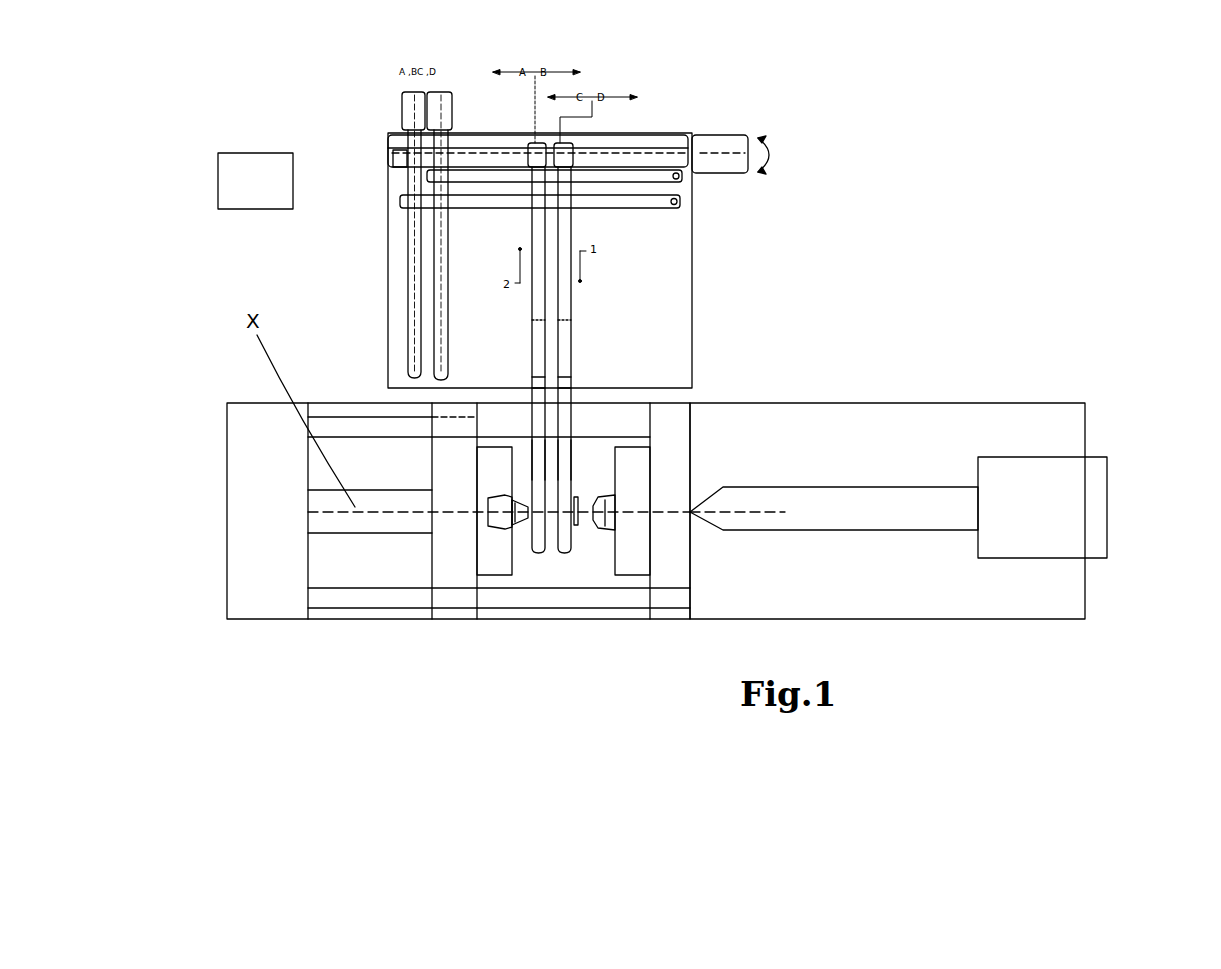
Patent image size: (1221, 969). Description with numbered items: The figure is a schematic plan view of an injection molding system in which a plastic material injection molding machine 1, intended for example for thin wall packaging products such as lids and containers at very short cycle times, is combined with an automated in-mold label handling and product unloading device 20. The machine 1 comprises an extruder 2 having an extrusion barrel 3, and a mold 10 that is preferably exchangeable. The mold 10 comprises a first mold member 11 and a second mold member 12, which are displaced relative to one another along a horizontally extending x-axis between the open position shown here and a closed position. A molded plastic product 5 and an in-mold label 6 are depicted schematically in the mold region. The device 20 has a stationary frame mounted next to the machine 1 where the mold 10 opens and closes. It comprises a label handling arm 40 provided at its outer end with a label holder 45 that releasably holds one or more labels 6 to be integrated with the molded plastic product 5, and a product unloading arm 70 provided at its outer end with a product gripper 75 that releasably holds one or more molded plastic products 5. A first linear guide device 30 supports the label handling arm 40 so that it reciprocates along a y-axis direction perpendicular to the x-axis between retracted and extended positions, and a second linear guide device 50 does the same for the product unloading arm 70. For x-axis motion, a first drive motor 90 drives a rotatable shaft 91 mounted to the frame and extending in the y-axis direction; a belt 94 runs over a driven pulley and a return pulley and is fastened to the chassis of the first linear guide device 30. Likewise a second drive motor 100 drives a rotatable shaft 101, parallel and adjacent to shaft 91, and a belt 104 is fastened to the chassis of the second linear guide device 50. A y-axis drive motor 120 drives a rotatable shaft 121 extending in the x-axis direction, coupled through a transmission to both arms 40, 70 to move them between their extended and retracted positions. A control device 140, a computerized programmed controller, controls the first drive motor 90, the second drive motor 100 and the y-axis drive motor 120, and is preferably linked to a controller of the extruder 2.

The plastic material injection molding machine 1 is at (1003, 368).
The extruder 2 is at (1082, 490).
The extrusion barrel 3 is at (828, 497).
The molded plastic product 5 is at (600, 530).
The in-mold label 6 is at (500, 528).
The mold 10 is at (480, 638).
The first mold member 11 is at (628, 553).
The second mold member 12 is at (503, 560).
The automated in-mold label handling and product unloading device 20 is at (748, 248).
The first linear guide device 30 is at (537, 298).
The label handling arm 40 is at (527, 497).
The label holder 45 is at (538, 462).
The second linear guide device 50 is at (563, 300).
The product unloading arm 70 is at (560, 440).
The product gripper 75 is at (577, 493).
The first drive motor 90 is at (405, 103).
The rotatable shaft 91 is at (410, 247).
The belt 94 is at (638, 199).
The second drive motor 100 is at (448, 107).
The rotatable shaft 101 is at (437, 301).
The belt 104 is at (640, 170).
The y-axis drive motor 120 is at (712, 142).
The rotatable shaft 121 is at (625, 150).
The control device 140 is at (233, 183).